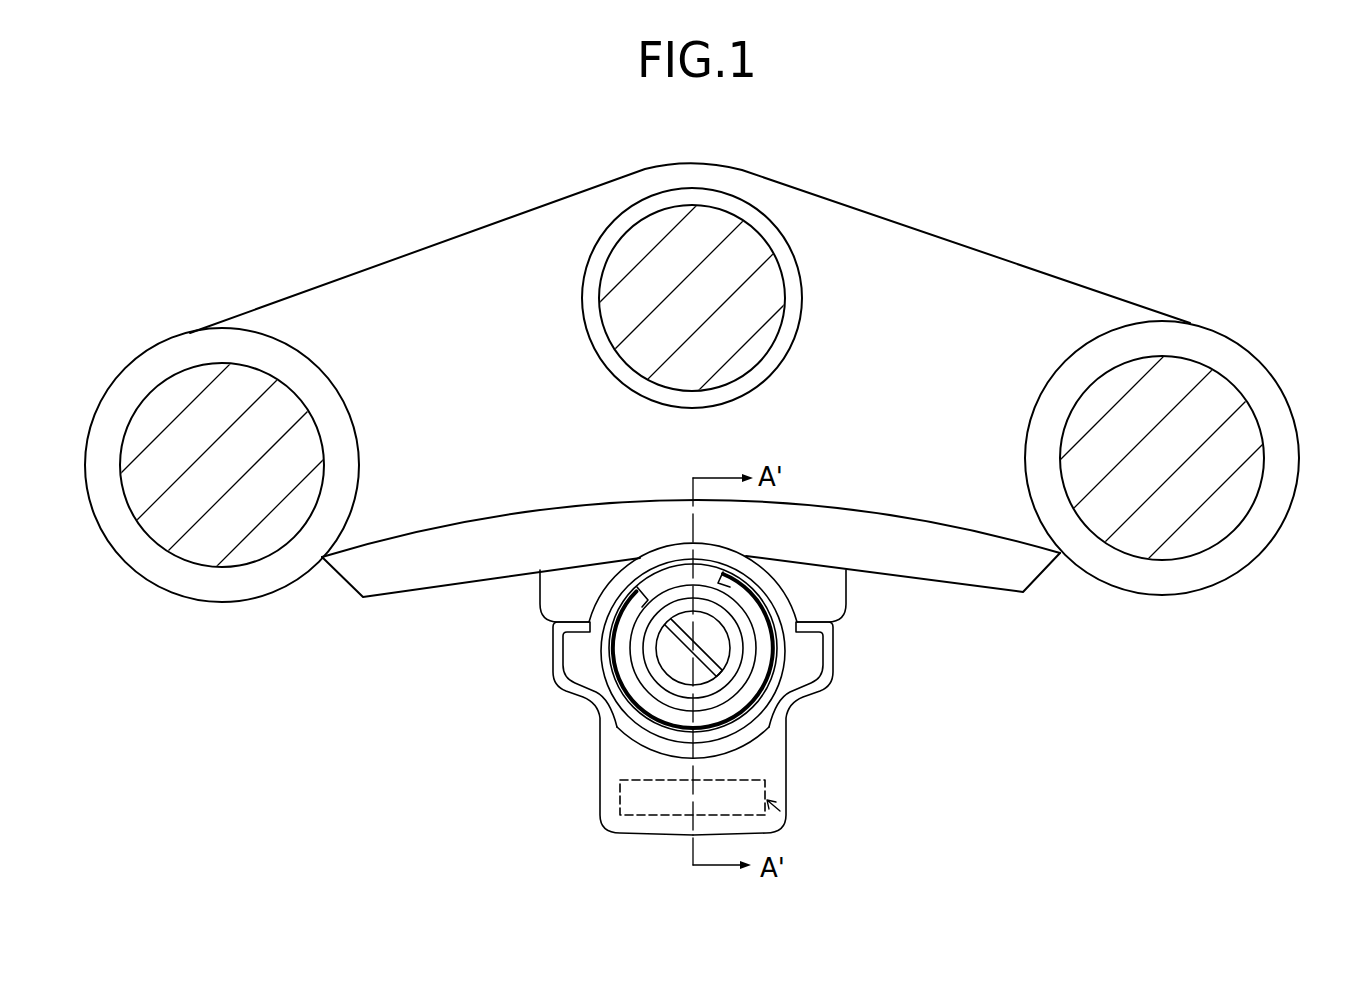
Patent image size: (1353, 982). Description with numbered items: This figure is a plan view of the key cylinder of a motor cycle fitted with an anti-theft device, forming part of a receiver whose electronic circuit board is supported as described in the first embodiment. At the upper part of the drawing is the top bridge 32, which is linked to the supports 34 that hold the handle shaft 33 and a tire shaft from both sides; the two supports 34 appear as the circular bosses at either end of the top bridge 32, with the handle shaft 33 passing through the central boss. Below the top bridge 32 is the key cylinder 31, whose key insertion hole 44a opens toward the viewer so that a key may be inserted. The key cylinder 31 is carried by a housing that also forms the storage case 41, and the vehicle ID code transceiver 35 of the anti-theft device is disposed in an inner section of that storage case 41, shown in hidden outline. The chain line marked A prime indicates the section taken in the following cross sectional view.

The key cylinder 31 is at (733, 663).
The top bridge 32 is at (530, 248).
The handle shaft 33 is at (776, 252).
The support 34 is at (222, 450).
The vehicle ID code transceiver 35 is at (786, 806).
The storage case 41 is at (789, 786).
The key insertion hole 44a is at (705, 658).